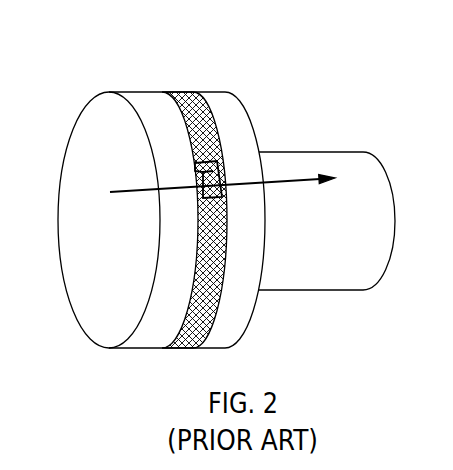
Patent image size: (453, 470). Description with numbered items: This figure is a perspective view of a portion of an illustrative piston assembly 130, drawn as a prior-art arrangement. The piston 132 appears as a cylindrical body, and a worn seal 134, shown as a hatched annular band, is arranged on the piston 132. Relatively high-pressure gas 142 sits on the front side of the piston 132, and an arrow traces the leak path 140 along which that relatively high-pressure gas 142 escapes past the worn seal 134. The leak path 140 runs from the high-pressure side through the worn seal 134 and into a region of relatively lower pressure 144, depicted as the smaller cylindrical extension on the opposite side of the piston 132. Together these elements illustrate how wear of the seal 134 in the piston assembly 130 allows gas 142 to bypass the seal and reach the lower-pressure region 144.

The piston assembly 130 is at (278, 42).
The piston 132 is at (92, 96).
The worn seal 134 is at (168, 92).
The leak path 140 is at (280, 173).
The relatively high-pressure gas 142 is at (68, 325).
The region of relatively lower pressure 144 is at (305, 325).